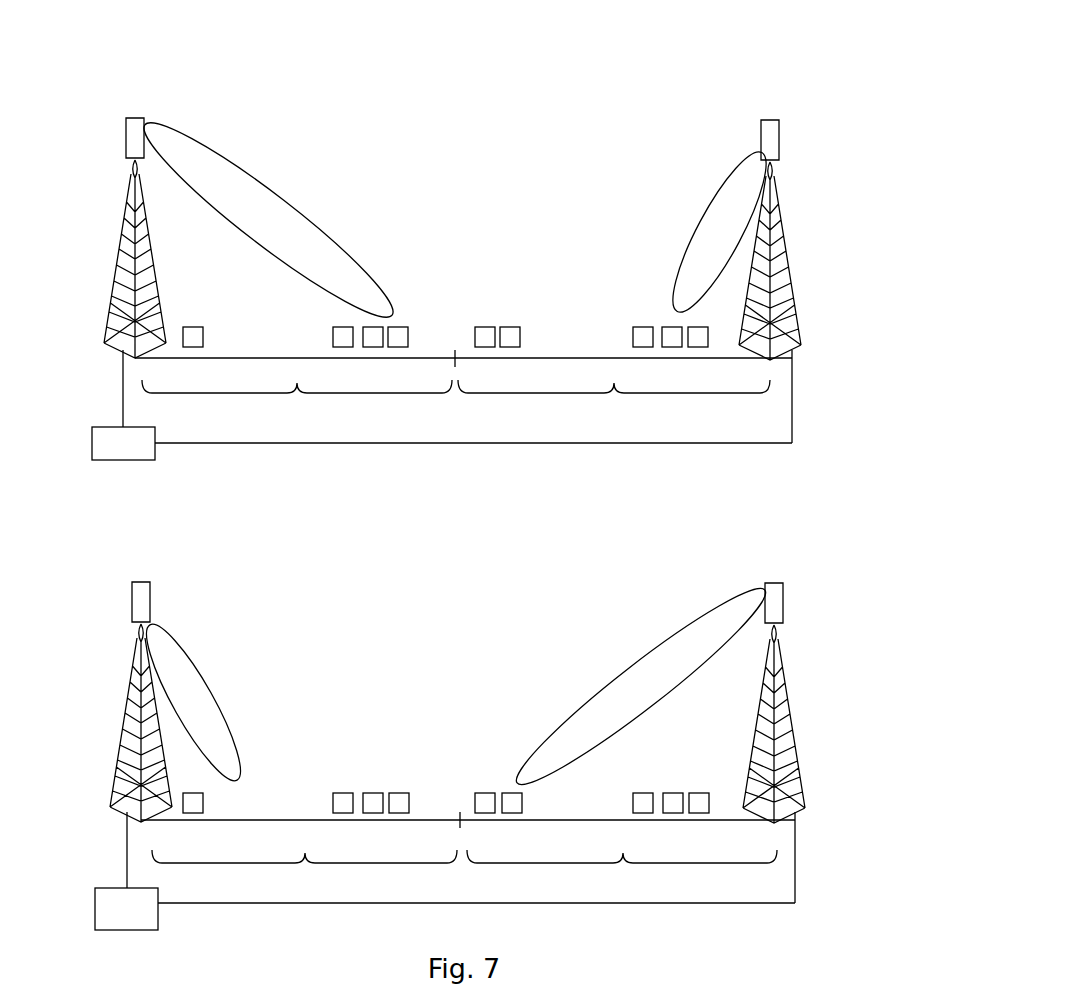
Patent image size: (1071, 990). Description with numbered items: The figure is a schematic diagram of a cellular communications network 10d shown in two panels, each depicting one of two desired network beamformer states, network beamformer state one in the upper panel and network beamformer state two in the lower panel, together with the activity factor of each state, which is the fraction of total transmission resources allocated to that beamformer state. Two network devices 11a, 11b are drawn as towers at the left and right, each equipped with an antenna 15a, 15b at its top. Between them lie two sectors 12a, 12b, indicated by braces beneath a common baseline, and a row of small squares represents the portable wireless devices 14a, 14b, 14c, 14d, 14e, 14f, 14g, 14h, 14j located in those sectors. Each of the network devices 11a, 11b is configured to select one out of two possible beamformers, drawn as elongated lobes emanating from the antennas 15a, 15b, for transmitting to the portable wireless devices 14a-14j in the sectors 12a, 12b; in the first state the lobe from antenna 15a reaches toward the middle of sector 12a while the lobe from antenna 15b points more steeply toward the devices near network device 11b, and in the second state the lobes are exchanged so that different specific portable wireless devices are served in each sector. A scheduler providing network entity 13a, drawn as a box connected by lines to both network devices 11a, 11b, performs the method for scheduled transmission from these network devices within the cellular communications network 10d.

The cellular communications network 10d is at (747, 82).
The network device 11a is at (106, 345).
The network device 11b is at (800, 330).
The antenna 15a is at (127, 140).
The antenna 15b is at (780, 130).
The sector 12a is at (299, 639).
The sector 12b is at (617, 639).
The scheduler providing network entity 13a is at (443, 678).
The portable wireless device 14a is at (193, 327).
The portable wireless device 14b is at (333, 334).
The portable wireless device 14c is at (373, 348).
The portable wireless device 14d is at (398, 327).
The portable wireless device 14e is at (485, 327).
The portable wireless device 14f is at (512, 327).
The portable wireless device 14g is at (643, 327).
The portable wireless device 14h is at (672, 327).
The portable wireless device 14j is at (700, 347).